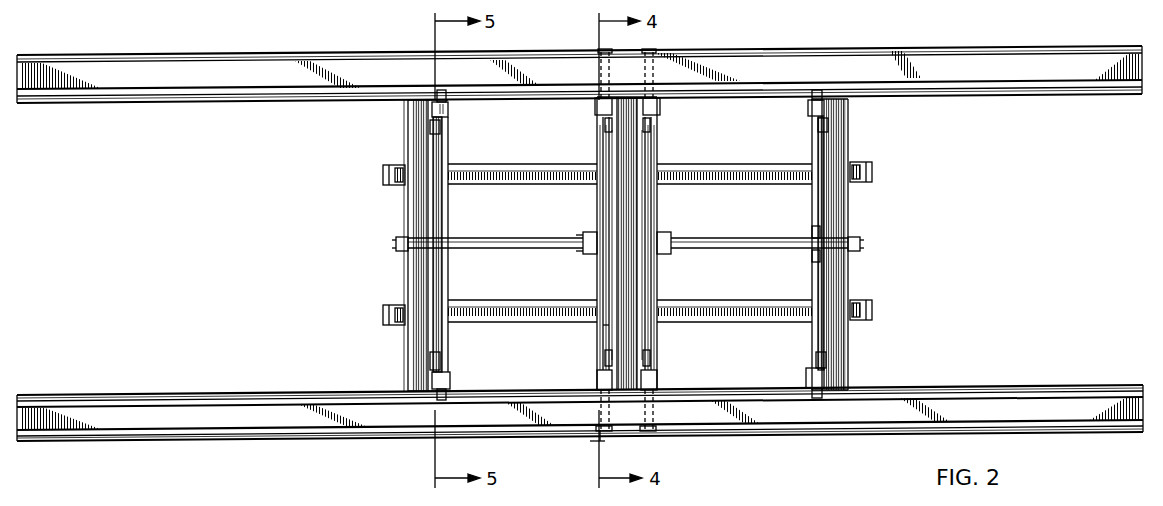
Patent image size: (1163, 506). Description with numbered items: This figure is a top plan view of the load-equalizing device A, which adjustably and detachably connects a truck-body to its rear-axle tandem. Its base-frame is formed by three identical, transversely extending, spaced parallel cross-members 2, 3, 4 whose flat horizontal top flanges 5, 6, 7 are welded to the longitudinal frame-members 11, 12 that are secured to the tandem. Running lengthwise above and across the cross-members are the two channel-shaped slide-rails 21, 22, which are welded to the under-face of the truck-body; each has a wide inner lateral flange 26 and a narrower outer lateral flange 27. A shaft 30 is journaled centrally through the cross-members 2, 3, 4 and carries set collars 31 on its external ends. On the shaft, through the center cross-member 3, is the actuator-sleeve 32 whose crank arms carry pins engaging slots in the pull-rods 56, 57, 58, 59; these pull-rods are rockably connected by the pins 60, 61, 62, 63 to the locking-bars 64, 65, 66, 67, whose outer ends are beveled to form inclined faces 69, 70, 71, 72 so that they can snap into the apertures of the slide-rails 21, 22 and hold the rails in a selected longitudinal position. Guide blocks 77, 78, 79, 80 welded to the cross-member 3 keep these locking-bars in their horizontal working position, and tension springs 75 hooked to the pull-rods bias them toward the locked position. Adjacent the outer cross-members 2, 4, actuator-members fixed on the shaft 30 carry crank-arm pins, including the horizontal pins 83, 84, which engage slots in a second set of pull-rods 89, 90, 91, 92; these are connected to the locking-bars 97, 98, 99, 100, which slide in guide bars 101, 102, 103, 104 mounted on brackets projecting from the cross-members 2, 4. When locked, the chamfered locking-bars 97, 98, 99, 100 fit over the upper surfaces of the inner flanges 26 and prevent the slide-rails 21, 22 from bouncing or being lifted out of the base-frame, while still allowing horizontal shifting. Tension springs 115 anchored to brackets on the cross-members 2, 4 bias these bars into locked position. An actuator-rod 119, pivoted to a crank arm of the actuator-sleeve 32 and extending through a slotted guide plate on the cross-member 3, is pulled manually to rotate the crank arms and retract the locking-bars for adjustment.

The cross-member 2 is at (409, 113).
The center cross-member 3 is at (638, 214).
The cross-member 4 is at (840, 205).
The top flange 5 is at (410, 194).
The top flange 6 is at (616, 194).
The top flange 7 is at (835, 117).
The longitudinal frame-member 11 is at (874, 173).
The longitudinal frame-member 12 is at (874, 311).
The slide-rail 21 is at (1040, 49).
The slide-rail 22 is at (1092, 388).
The inner lateral flange 26 is at (978, 92).
The outer lateral flange 27 is at (960, 51).
The shaft 30 is at (748, 237).
The set collar 31 is at (400, 251).
The actuator-sleeve 32 is at (590, 252).
The pull-rod 56 is at (604, 145).
The pull-rod 57 is at (598, 288).
The pull-rod 58 is at (650, 152).
The pull-rod 59 is at (651, 292).
The pin 60 is at (605, 128).
The pin 61 is at (603, 357).
The pin 62 is at (651, 130).
The pin 63 is at (652, 354).
The locking-bar 64 is at (596, 110).
The locking-bar 65 is at (597, 371).
The locking-bar 66 is at (654, 116).
The locking-bar 67 is at (655, 362).
The inclined face 69 is at (606, 51).
The inclined face 70 is at (606, 433).
The inclined face 71 is at (648, 51).
The inclined face 72 is at (650, 433).
The tension spring 75 is at (608, 158).
The guide block 77 is at (604, 104).
The guide block 78 is at (602, 386).
The guide block 79 is at (651, 104).
The guide block 80 is at (655, 386).
The horizontal pin 83 is at (812, 232).
The horizontal pin 84 is at (810, 258).
The pull-rod 89 is at (440, 158).
The pull-rod 90 is at (440, 336).
The pull-rod 91 is at (810, 143).
The pull-rod 92 is at (812, 331).
The locking-bar 97 is at (429, 128).
The locking-bar 98 is at (442, 362).
The locking-bar 99 is at (826, 126).
The locking-bar 100 is at (808, 360).
The guide bar 101 is at (450, 110).
The guide bar 102 is at (451, 379).
The guide bar 103 is at (806, 107).
The guide bar 104 is at (806, 377).
The tension spring 115 is at (440, 206).
The actuator-rod 119 is at (598, 333).
The load-equalizing device A is at (870, 362).